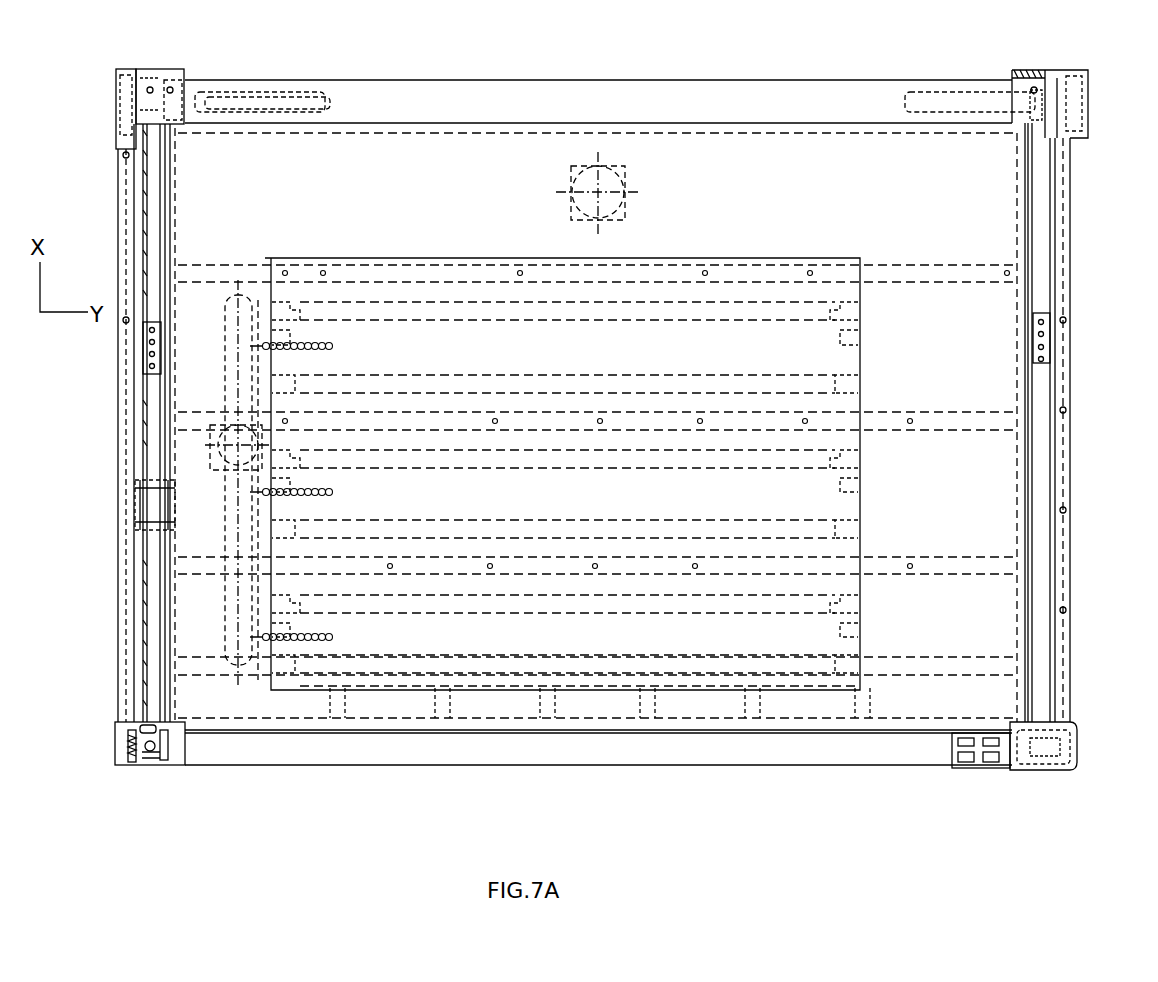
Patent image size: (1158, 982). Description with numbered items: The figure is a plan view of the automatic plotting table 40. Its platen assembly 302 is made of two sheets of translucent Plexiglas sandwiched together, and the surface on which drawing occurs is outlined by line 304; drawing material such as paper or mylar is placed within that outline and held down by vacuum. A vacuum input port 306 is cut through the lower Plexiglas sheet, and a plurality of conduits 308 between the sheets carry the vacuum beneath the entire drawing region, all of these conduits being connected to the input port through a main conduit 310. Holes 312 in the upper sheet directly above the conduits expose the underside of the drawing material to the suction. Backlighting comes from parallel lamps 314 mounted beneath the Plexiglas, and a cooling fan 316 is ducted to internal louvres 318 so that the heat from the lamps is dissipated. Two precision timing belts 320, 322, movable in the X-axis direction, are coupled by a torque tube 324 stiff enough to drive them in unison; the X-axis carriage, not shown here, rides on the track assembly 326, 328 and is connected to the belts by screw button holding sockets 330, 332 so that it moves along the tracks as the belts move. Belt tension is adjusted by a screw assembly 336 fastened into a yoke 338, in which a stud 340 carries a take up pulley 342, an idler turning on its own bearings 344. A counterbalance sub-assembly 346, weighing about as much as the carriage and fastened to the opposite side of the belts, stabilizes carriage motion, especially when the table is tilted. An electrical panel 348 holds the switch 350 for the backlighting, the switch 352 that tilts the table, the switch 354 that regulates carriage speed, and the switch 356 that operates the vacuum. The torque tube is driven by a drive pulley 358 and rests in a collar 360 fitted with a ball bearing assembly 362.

The platen assembly 302 is at (380, 166).
The line outlining drawing surface 304 is at (266, 257).
The vacuum input port 306 is at (212, 433).
The conduits 308 is at (262, 352).
The main conduit 310 is at (223, 590).
The holes 312 is at (312, 352).
The parallel lamps 314 is at (394, 322).
The cooling fan 316 is at (572, 165).
The internal louvres 318 is at (670, 262).
The timing belt 320 is at (150, 173).
The timing belt 322 is at (1050, 185).
The torque tube 324 is at (297, 96).
The track assembly 326 is at (170, 202).
The track assembly 328 is at (1035, 208).
The screw button holding socket 330 is at (145, 357).
The screw button holding socket 332 is at (1035, 318).
The screw assembly 336 is at (135, 768).
The yoke 338 is at (113, 722).
The stud 340 is at (126, 745).
The take up pulley 342 is at (1064, 770).
The bearings 344 is at (165, 768).
The counterbalance sub-assembly 346 is at (133, 495).
The electrical panel 348 is at (953, 774).
The switch 350 is at (947, 760).
The switch 352 is at (993, 767).
The switch 354 is at (966, 762).
The switch 356 is at (1005, 770).
The drive pulley 358 is at (120, 70).
The collar 360 is at (188, 80).
The ball bearing assembly 362 is at (169, 85).
The automatic plotting table 40 is at (78, 546).